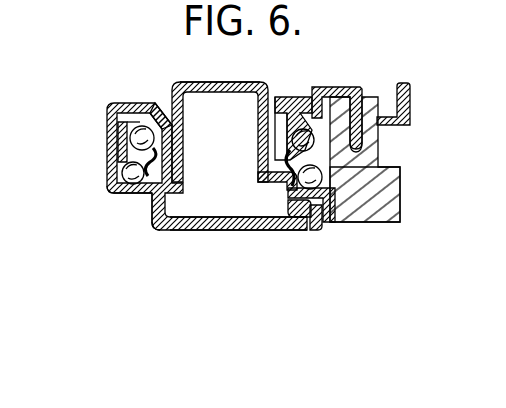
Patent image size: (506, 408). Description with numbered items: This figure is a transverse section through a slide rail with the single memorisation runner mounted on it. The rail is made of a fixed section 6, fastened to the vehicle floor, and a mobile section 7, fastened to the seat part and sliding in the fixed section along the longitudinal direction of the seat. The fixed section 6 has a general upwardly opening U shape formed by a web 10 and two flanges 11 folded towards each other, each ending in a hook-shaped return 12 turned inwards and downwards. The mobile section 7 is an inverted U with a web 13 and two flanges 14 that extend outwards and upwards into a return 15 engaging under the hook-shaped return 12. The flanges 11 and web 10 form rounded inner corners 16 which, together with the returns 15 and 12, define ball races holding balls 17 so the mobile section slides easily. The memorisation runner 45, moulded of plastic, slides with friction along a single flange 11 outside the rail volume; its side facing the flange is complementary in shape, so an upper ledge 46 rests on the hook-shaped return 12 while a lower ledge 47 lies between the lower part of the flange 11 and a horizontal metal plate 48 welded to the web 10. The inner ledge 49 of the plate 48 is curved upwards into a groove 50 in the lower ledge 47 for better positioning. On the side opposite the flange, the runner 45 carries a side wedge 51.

The fixed section 6 is at (141, 208).
The mobile section 7 is at (188, 81).
The web 10 is at (155, 212).
The flanges 11 is at (110, 124).
The hook-shaped return 12 is at (160, 112).
The web 13 is at (229, 83).
The flanges 14 is at (181, 132).
The return 15 is at (158, 186).
The rounded inner corners 16 is at (113, 194).
The balls 17 is at (112, 170).
The memorisation runner 45 is at (383, 234).
The upper ledge 46 is at (287, 99).
The lower ledge 47 is at (298, 233).
The horizontal metal plate 48 is at (226, 232).
The inner ledge 49 is at (320, 228).
The groove 50 is at (337, 214).
The side wedge 51 is at (380, 188).